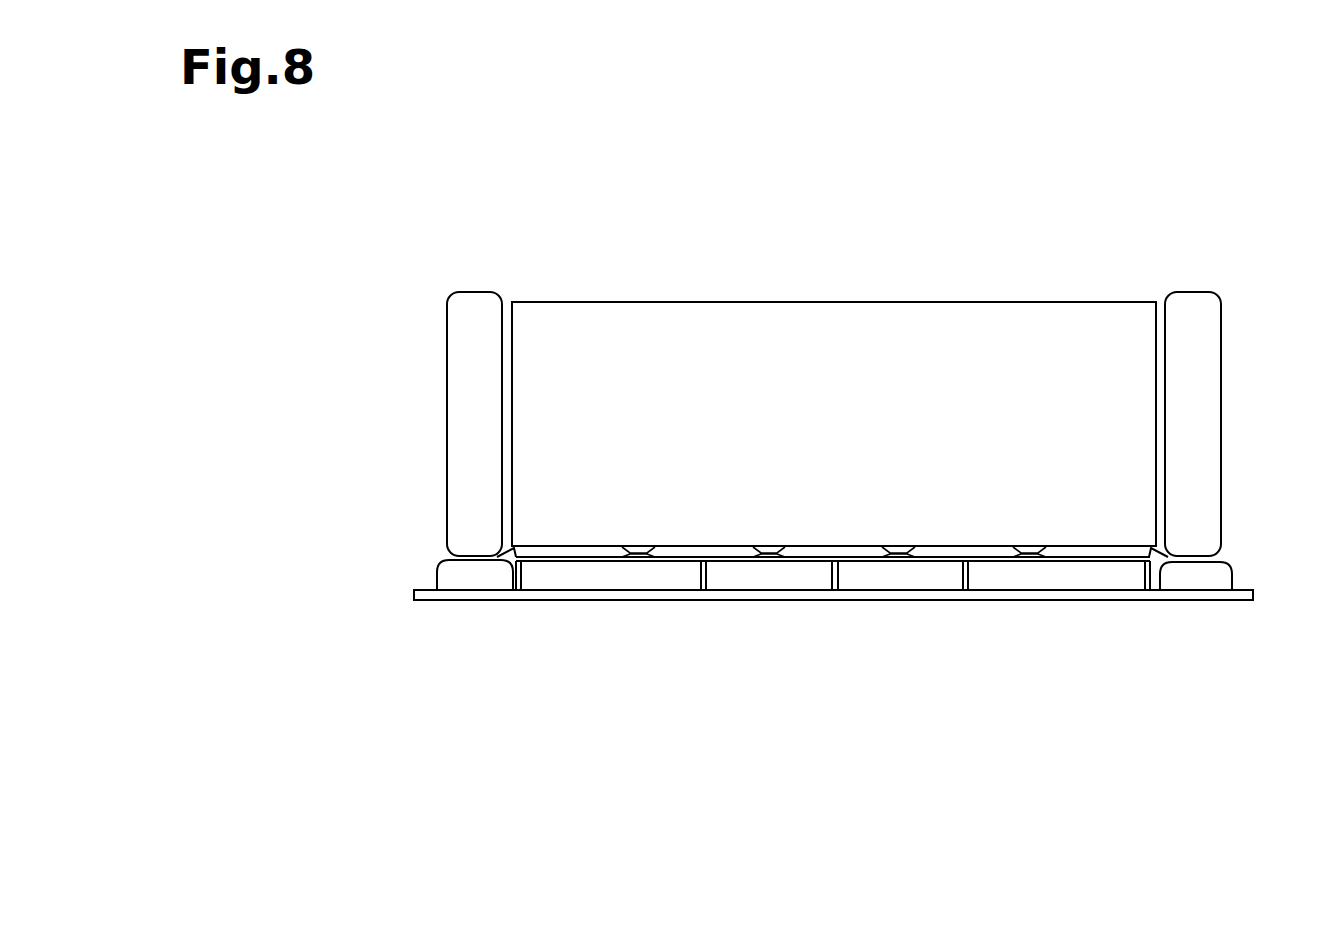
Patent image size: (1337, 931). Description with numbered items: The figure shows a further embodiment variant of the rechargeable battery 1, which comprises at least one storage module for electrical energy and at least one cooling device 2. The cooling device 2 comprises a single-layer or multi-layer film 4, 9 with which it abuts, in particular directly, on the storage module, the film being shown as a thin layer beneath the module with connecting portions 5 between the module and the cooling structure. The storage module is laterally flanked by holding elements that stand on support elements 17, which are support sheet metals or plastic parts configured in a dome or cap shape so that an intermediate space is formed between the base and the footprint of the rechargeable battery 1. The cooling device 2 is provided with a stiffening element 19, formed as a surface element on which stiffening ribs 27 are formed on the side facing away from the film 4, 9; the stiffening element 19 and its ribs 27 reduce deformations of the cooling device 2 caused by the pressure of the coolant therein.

The rechargeable battery 1 is at (1094, 256).
The cooling device 2 is at (816, 571).
The single-layer or multi-layer film 4 is at (588, 546).
The partition wall 5 is at (568, 553).
The single-layer or multi-layer film 9 is at (596, 570).
The support element 17 is at (424, 553).
The stiffening element 19 is at (782, 587).
The stiffening rib 27 is at (842, 575).